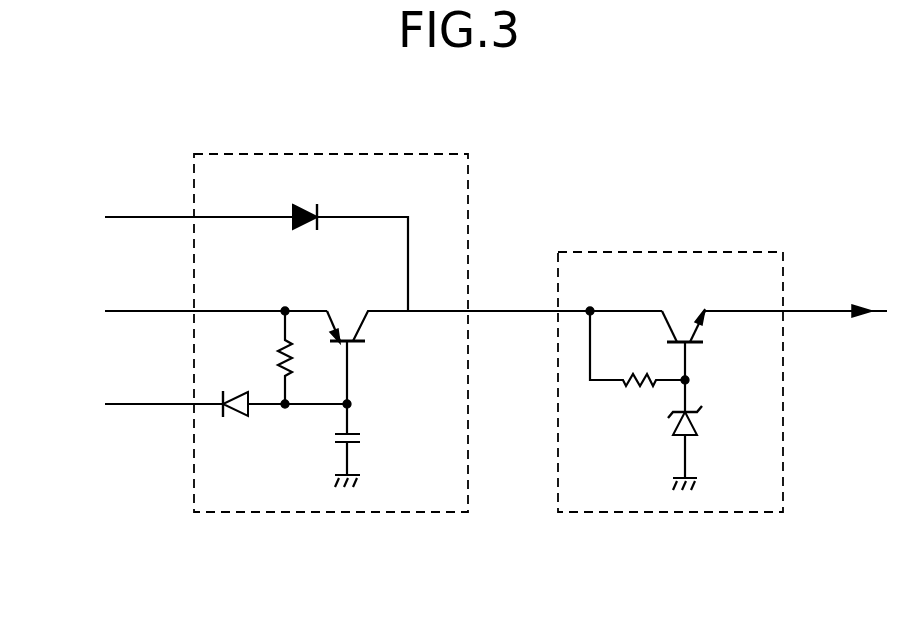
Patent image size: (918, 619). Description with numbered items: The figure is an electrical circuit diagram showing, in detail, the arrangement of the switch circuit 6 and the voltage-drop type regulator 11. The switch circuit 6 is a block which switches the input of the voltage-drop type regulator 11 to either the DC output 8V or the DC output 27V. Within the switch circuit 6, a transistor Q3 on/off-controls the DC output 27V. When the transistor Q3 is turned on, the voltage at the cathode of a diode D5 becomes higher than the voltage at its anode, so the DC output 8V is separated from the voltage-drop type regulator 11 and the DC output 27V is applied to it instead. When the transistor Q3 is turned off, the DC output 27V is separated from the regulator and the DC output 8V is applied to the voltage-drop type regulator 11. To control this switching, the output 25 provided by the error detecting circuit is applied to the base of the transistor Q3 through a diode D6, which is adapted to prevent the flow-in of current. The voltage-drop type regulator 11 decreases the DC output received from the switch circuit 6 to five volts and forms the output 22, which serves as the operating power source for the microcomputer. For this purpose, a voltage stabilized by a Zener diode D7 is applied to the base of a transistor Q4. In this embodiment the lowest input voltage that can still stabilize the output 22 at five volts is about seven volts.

The switch circuit 6 is at (308, 513).
The voltage-drop type regulator 11 is at (660, 513).
The output 22 is at (824, 311).
The output 25 is at (125, 404).
The DC output 8V is at (125, 217).
The DC output 27V is at (125, 311).
The diode D5 is at (348, 257).
The diode D6 is at (282, 423).
The Zener diode D7 is at (705, 435).
The transistor Q3 is at (494, 343).
The transistor Q4 is at (645, 335).